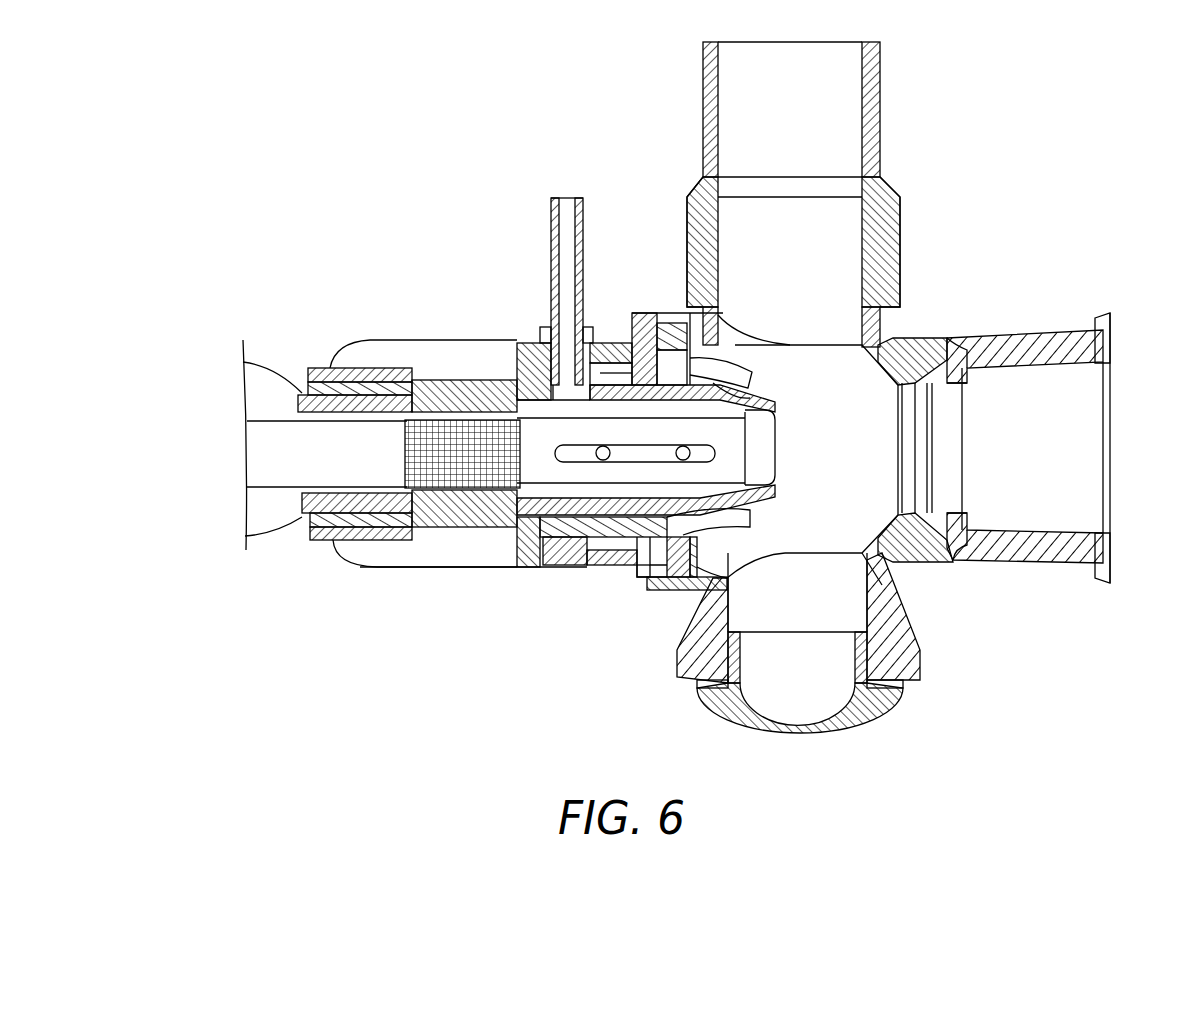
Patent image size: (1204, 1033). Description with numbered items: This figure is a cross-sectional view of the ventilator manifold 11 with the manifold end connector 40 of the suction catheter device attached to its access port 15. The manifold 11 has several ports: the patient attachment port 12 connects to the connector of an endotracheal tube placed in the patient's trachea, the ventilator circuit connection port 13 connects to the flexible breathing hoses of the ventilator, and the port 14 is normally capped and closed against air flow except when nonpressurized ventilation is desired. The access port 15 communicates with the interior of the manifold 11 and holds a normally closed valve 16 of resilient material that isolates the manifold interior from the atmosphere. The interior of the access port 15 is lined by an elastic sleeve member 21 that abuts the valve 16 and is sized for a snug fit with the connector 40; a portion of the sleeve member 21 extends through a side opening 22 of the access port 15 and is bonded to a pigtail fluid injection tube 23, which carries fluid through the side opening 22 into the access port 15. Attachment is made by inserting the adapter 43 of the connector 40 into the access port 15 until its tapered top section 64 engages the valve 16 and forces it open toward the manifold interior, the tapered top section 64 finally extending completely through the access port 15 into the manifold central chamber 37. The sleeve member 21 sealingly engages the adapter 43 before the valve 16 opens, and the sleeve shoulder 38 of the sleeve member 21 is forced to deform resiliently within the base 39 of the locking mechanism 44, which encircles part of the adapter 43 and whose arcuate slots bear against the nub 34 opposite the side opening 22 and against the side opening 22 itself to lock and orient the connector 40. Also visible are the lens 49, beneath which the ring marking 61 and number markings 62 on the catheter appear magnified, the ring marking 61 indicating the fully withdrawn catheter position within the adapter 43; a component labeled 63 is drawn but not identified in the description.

The ventilator manifold 11 is at (1040, 574).
The patient attachment port 12 is at (1028, 318).
The ventilator circuit connection port 13 is at (913, 236).
The port 14 is at (940, 670).
The access port 15 is at (633, 588).
The normally closed valve 16 is at (737, 380).
The sleeve member 21 is at (619, 340).
The side opening 22 is at (590, 330).
The pigtail fluid injection tube 23 is at (548, 213).
The nub 34 is at (575, 566).
The manifold central chamber 37 is at (874, 450).
The sleeve shoulder 38 is at (510, 566).
The base 39 is at (540, 566).
The manifold end connector 40 is at (332, 502).
The adapter 43 is at (612, 567).
The locking mechanism 44 is at (446, 576).
The lens 49 is at (420, 400).
The ring marking 61 is at (460, 400).
The number markings 62 is at (262, 453).
The piston 63 is at (743, 462).
The tapered top section 64 is at (748, 512).